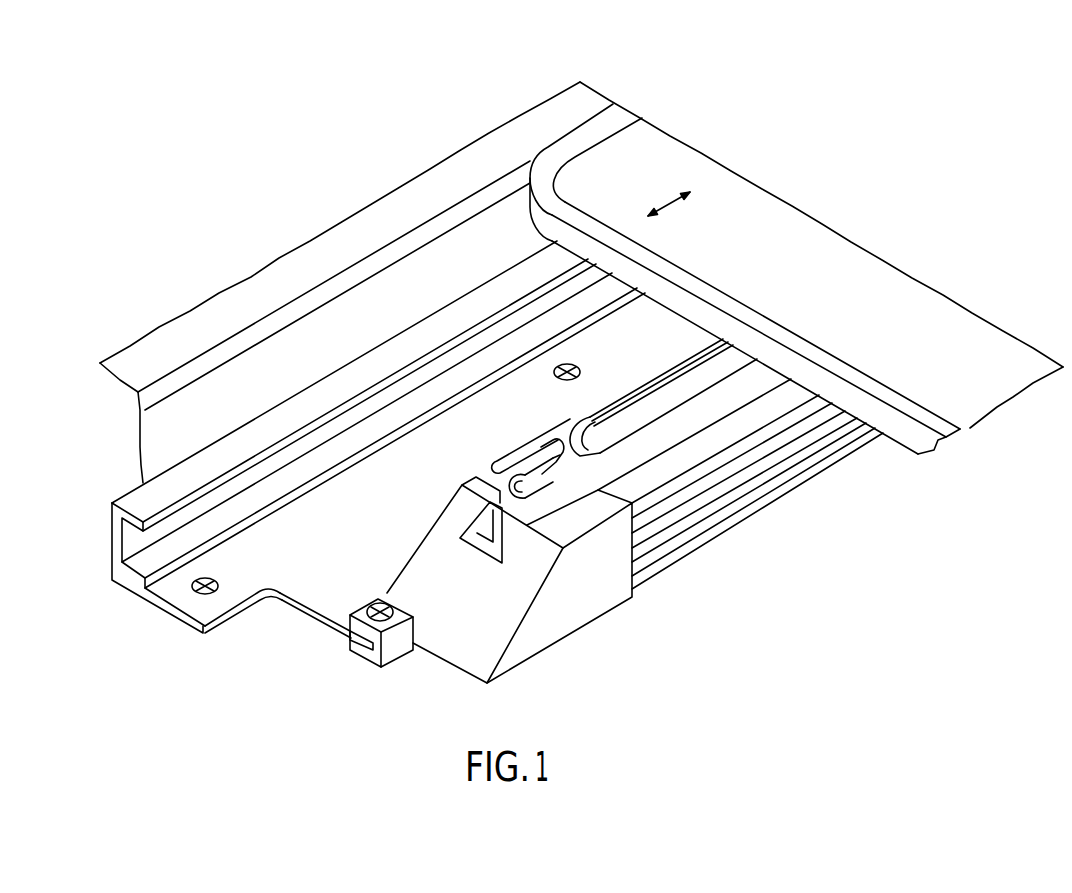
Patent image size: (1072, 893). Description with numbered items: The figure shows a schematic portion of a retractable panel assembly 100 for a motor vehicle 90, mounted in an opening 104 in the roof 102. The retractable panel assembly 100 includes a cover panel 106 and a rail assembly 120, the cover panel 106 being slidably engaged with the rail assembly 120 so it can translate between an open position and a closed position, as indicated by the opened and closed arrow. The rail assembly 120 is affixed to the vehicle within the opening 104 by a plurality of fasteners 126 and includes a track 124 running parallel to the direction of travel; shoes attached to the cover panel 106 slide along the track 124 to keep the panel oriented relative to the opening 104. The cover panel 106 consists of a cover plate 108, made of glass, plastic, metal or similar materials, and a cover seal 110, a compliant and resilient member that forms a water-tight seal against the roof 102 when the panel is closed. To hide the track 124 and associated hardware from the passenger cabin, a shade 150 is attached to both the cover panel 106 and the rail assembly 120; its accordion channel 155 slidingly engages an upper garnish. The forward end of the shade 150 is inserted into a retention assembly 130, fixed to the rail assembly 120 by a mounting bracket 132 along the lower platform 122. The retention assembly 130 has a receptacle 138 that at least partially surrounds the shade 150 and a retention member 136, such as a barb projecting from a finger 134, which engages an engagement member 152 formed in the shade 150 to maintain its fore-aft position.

The motor vehicle 90 is at (768, 91).
The retractable panel assembly 100 is at (878, 214).
The roof 102 is at (205, 314).
The opening 104 is at (162, 437).
The cover panel 106 is at (932, 318).
The cover plate 108 is at (787, 216).
The cover seal 110 is at (762, 318).
The rail assembly 120 is at (154, 621).
The lower platform 122 is at (352, 633).
The track 124 is at (250, 502).
The fasteners 126 is at (220, 578).
The retention assembly 130 is at (455, 665).
The mounting bracket 132 is at (363, 663).
The finger 134 is at (565, 442).
The retention member 136 is at (564, 464).
The receptacle 138 is at (613, 503).
The shade 150 is at (684, 561).
The engagement member 152 is at (541, 484).
The accordion channel 155 is at (694, 389).